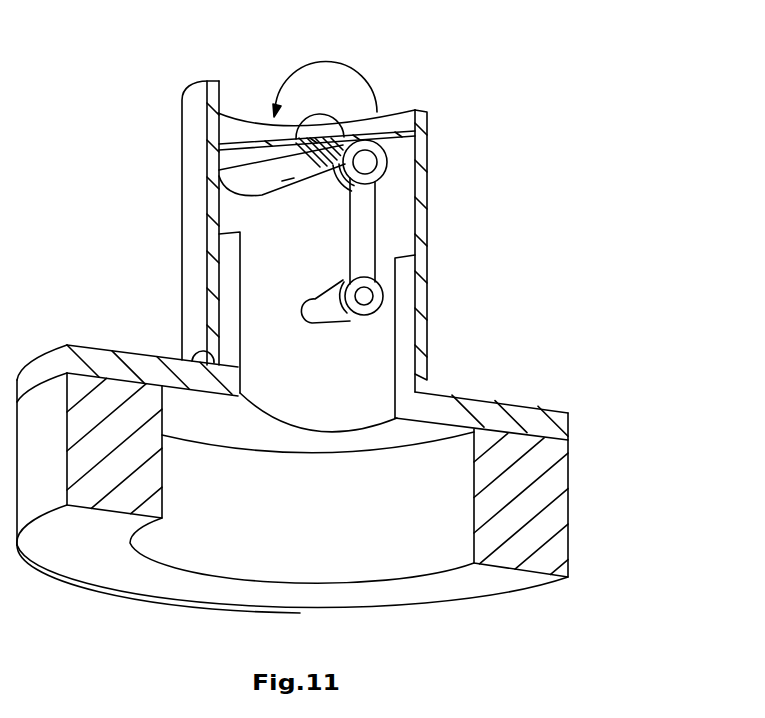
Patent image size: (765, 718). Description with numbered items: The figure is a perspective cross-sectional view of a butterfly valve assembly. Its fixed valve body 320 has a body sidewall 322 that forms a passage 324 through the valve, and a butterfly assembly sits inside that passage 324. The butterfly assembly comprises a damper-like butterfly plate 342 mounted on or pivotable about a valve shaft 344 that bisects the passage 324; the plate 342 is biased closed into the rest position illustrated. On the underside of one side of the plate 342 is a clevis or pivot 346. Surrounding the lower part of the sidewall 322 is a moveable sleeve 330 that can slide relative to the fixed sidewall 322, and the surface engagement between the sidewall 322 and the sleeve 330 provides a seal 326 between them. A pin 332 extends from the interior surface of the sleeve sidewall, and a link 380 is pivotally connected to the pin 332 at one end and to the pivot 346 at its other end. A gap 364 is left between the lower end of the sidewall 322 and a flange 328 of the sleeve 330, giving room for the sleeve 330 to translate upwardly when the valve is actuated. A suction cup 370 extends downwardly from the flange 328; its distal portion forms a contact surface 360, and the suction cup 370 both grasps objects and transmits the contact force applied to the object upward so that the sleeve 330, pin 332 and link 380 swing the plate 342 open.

The valve body 320 is at (214, 206).
The body sidewall 322 is at (212, 163).
The passage 324 is at (453, 107).
The seal 326 is at (214, 277).
The flange 328 is at (530, 424).
The moveable sleeve 330 is at (380, 362).
The pin 332 is at (325, 317).
The butterfly plate 342 is at (250, 141).
The valve shaft 344 is at (278, 172).
The pivot 346 is at (380, 181).
The contact surface 360 is at (485, 583).
The gap 364 is at (192, 348).
The suction cup 370 is at (522, 515).
The link 380 is at (375, 236).